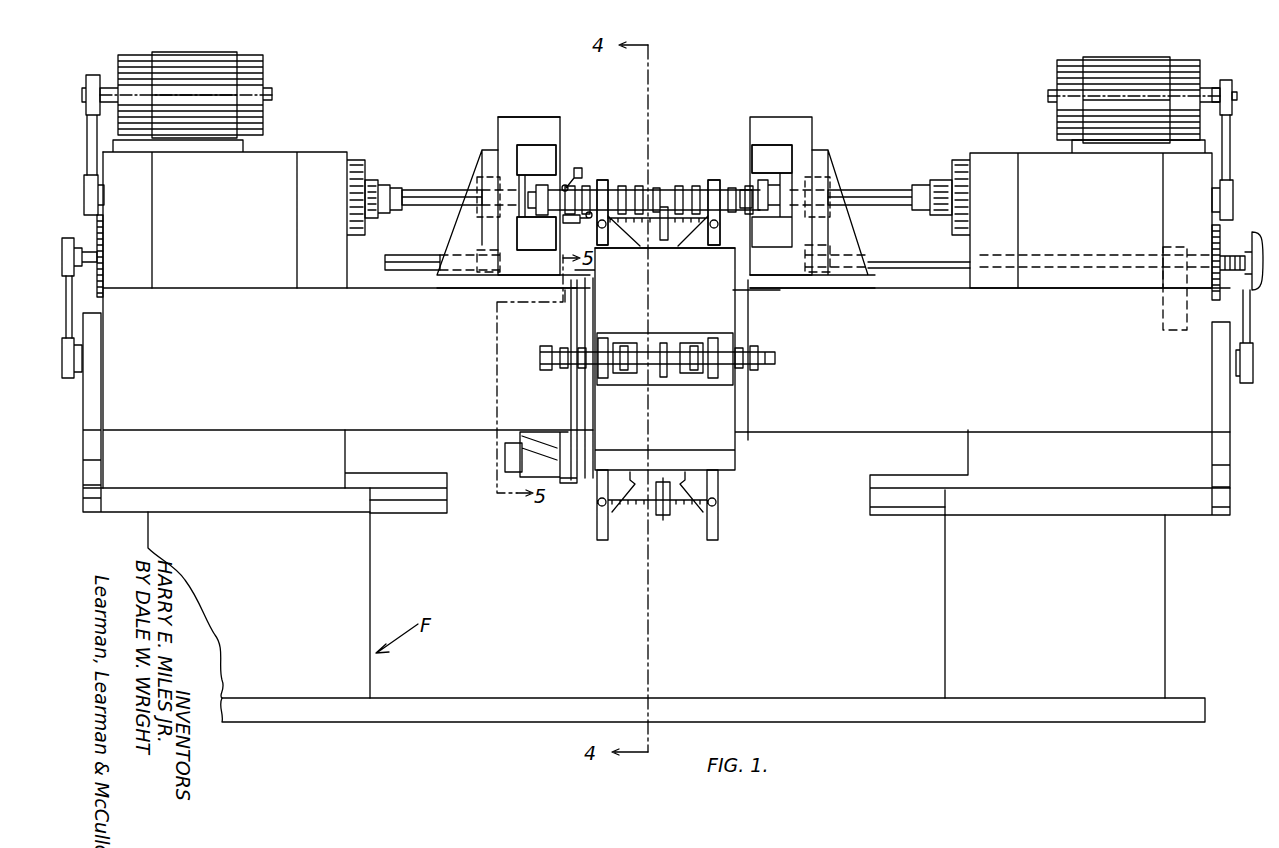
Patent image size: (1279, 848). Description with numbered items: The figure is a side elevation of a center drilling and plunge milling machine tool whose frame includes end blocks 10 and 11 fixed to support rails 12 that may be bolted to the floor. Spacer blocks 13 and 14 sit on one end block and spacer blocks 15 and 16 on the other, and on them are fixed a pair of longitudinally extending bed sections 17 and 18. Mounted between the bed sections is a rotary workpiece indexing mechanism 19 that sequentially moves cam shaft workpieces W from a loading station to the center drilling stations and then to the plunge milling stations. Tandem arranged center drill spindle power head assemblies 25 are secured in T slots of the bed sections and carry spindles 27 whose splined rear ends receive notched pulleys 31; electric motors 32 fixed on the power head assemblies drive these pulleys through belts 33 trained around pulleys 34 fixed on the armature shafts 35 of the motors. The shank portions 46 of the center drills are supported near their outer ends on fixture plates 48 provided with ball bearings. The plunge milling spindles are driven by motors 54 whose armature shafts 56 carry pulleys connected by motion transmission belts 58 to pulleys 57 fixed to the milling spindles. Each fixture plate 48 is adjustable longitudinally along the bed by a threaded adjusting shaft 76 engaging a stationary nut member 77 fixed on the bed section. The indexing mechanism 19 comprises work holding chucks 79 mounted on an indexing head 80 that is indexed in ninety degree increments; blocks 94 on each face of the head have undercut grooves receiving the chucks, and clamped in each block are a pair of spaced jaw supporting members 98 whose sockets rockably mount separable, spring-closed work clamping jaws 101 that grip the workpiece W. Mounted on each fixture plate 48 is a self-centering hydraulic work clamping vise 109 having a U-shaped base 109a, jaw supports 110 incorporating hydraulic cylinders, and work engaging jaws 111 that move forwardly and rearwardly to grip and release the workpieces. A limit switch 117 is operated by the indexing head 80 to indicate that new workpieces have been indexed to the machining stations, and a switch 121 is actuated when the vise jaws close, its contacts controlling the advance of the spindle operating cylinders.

The end block 10 is at (358, 582).
The end block 11 is at (955, 580).
The support rails 12 is at (420, 712).
The spacer block 13 is at (292, 500).
The spacer block 14 is at (335, 457).
The spacer block 15 is at (1083, 513).
The spacer block 16 is at (982, 457).
The bed section 17 is at (428, 418).
The bed section 18 is at (852, 420).
The rotary workpiece indexing mechanism 19 is at (579, 498).
The center drill spindle power head assembly 25 is at (315, 168).
The spindle 27 is at (375, 182).
The pulley 31 is at (84, 195).
The electric motor 32 is at (192, 55).
The belt 33 is at (90, 150).
The pulley 34 is at (1230, 82).
The armature shaft 35 is at (1236, 98).
The shank portion 46 is at (430, 192).
The fixture plate 48 is at (488, 152).
The motor 54 is at (100, 262).
The armature shaft 56 is at (78, 248).
The pulley 57 is at (62, 365).
The motion transmission belt 58 is at (66, 306).
The threaded adjusting shaft 76 is at (421, 262).
The stationary nut member 77 is at (1163, 310).
The work holding chuck 79 is at (608, 520).
The indexing head 80 is at (665, 378).
The block 94 is at (672, 262).
The jaw supporting member 98 is at (625, 242).
The work clamping jaw 101 is at (609, 186).
The work clamping vise 109 is at (546, 110).
The base 109a is at (560, 132).
The jaw support 110 is at (555, 160).
The work engaging jaw 111 is at (540, 196).
The limit switch 117 is at (582, 230).
The switch 121 is at (583, 170).
The workpiece W is at (681, 184).